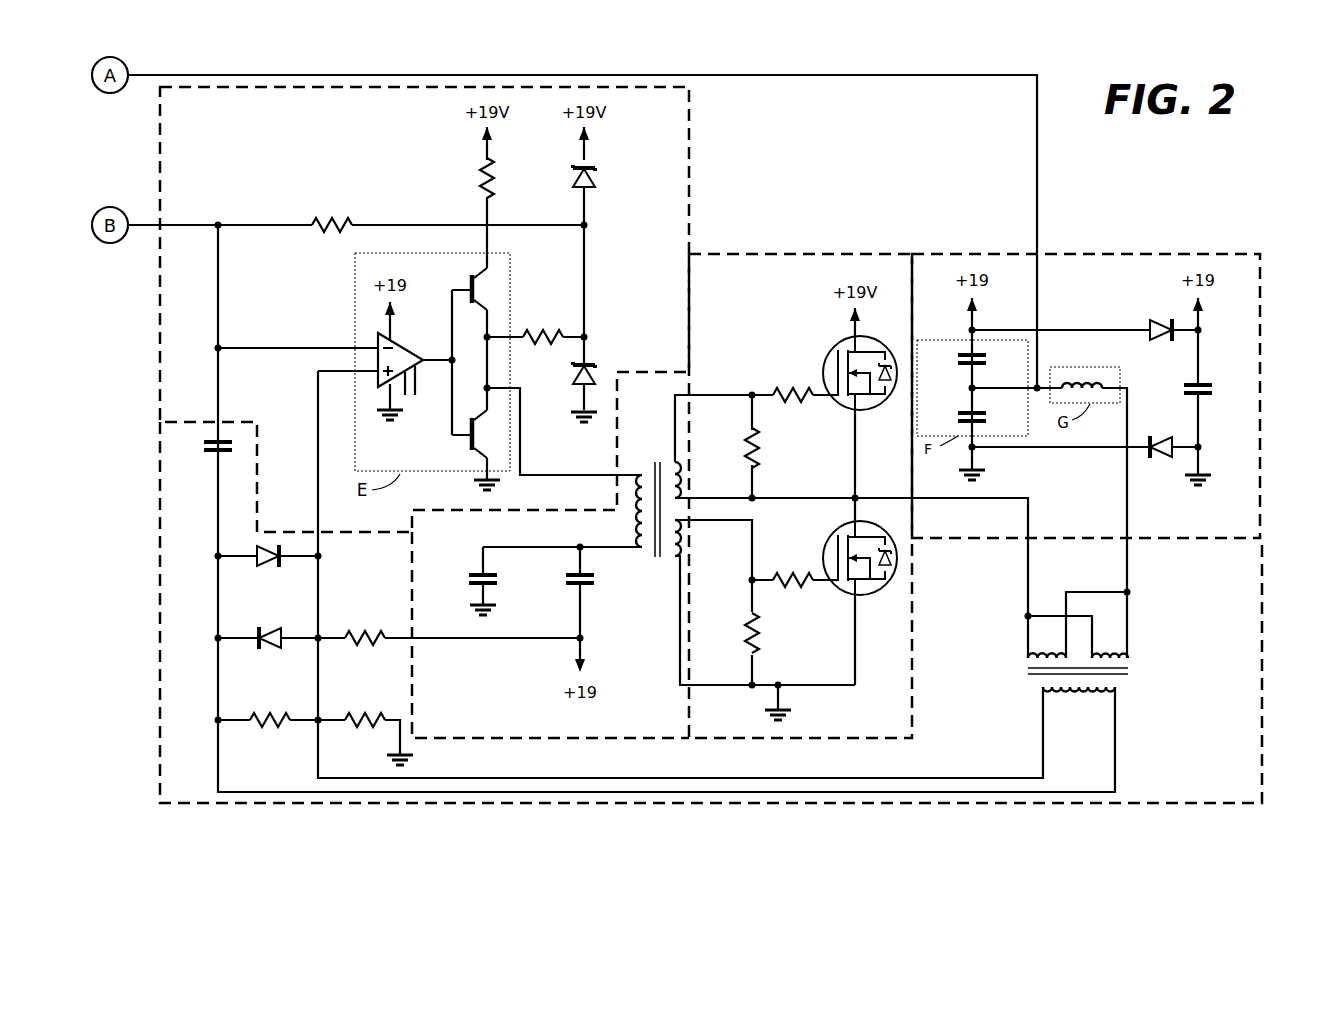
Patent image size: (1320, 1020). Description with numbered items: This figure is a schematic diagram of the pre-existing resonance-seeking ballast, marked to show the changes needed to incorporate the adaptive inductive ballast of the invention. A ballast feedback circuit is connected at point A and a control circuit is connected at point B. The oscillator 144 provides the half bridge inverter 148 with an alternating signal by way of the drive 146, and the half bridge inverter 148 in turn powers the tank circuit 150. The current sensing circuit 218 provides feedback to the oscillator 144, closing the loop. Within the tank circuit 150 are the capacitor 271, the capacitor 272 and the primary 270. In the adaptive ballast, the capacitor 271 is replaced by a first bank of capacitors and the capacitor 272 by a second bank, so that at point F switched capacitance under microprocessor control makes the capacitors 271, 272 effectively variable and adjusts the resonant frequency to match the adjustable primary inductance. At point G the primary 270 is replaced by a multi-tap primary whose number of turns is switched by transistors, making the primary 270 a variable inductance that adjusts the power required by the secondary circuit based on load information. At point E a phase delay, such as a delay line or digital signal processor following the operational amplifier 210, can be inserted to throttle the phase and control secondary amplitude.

The oscillator 144 is at (696, 127).
The drive 146 is at (648, 575).
The half bridge inverter 148 is at (822, 249).
The tank circuit 150 is at (1076, 250).
The operational amplifier 210 is at (380, 379).
The current sensing circuit 218 is at (155, 699).
The primary 270 is at (1082, 374).
The capacitor 271 is at (962, 350).
The capacitor 272 is at (962, 410).